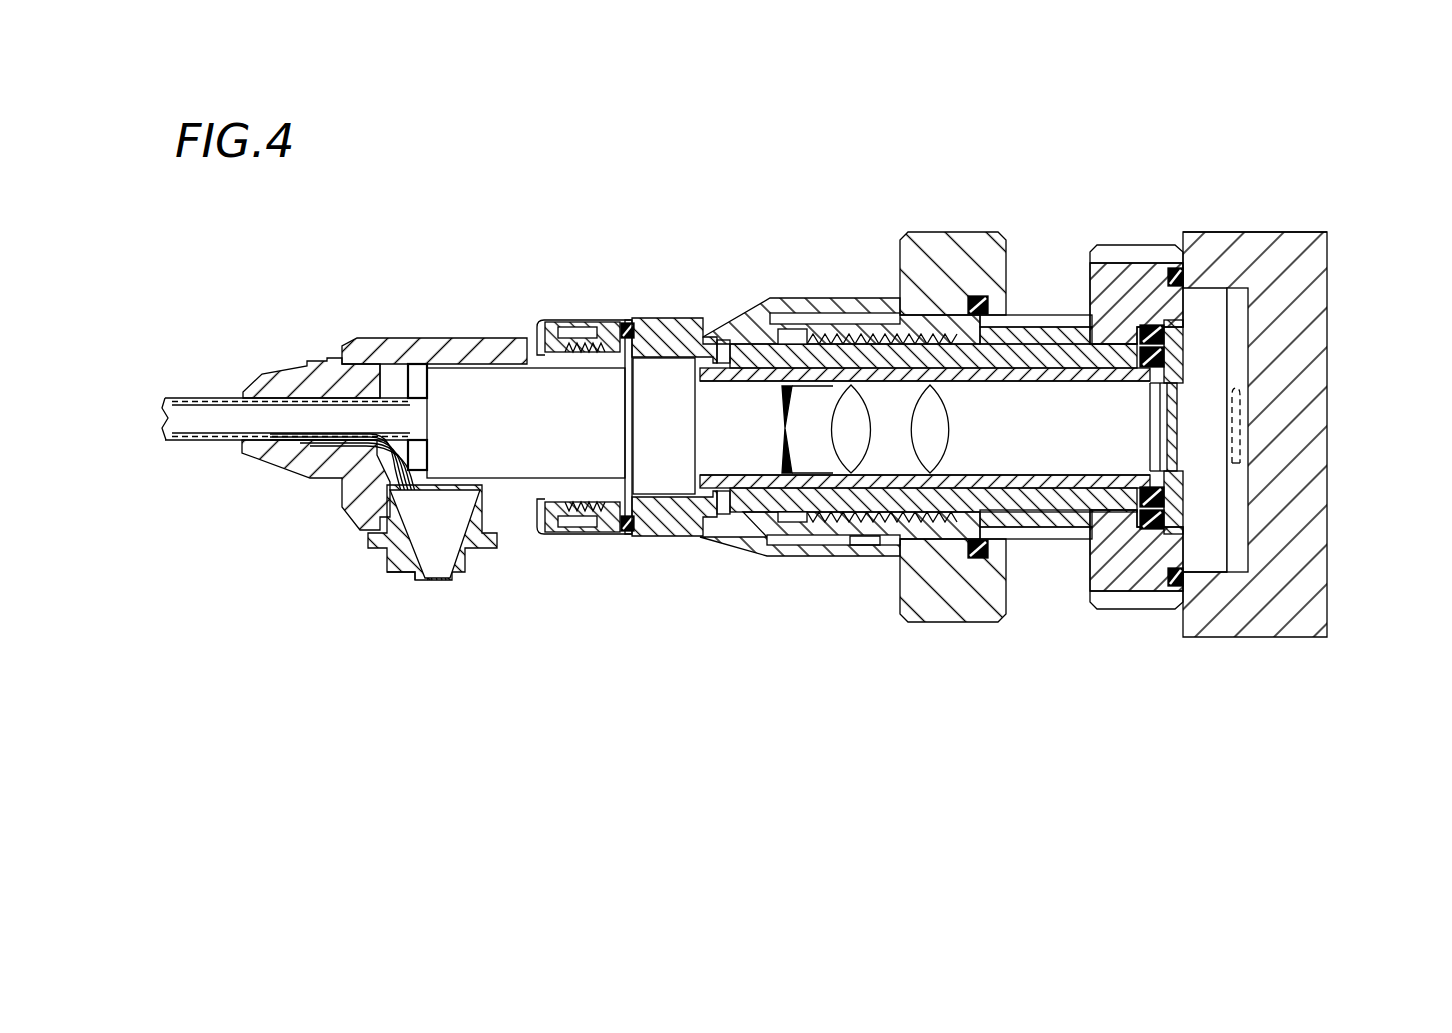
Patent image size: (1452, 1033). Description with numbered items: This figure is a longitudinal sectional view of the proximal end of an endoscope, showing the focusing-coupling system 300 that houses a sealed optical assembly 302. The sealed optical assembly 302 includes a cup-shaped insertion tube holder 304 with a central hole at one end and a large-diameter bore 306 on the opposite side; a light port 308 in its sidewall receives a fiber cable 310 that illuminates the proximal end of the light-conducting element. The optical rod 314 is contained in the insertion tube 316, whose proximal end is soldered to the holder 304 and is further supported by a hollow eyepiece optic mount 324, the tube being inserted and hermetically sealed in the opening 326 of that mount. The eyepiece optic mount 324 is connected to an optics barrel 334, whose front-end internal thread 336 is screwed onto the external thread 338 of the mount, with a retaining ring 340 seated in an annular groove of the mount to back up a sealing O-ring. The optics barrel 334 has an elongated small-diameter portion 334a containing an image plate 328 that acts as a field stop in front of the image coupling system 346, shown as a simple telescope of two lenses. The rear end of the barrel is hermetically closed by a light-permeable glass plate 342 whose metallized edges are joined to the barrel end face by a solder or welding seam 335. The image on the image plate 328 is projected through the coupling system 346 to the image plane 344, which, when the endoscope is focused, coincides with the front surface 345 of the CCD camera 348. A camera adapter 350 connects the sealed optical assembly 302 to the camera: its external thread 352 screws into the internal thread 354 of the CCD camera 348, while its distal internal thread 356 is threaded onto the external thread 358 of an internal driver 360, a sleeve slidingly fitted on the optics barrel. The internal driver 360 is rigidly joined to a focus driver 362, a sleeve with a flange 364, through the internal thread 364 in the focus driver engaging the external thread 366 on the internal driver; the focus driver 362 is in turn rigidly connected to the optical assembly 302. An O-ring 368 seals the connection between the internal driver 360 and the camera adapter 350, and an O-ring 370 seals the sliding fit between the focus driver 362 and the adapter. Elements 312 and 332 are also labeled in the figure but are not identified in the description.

The focusing-coupling system 300 is at (818, 238).
The sealed optical assembly 302 is at (528, 320).
The insertion tube holder 304 is at (255, 393).
The large-diameter bore 306 is at (357, 338).
The light port 308 is at (392, 574).
The fiber cable 310 is at (455, 588).
The lower ferrule body 312 is at (270, 425).
The optical rod 314 is at (438, 409).
The insertion tube 316 is at (193, 440).
The hollow eyepiece optic mount 324 is at (592, 330).
The opening 326 is at (450, 357).
The image plate 328 is at (782, 437).
The inner tube 332 is at (727, 452).
The optics barrel 334 is at (668, 350).
The elongated small-diameter portion 334a is at (1052, 375).
The solder or welding seam 335 is at (1240, 350).
The internal thread 336 is at (548, 513).
The external thread 338 is at (595, 540).
The retaining ring 340 is at (545, 320).
The glass plate 342 is at (1185, 470).
The image plane 344 is at (1240, 375).
The front surface 345 is at (1240, 437).
The image coupling system 346 is at (878, 556).
The CCD camera 348 is at (1312, 640).
The camera adapter 350 is at (1138, 604).
The external thread 352 is at (1210, 250).
The internal thread 354 is at (1200, 575).
The internal thread 356 is at (845, 325).
The external thread 358 is at (808, 556).
The internal driver 360 is at (1063, 500).
The focus driver 362 is at (922, 626).
The flange 364 is at (794, 325).
The external thread 366 is at (665, 548).
The O-ring 368 is at (1096, 600).
The O-ring 370 is at (978, 562).